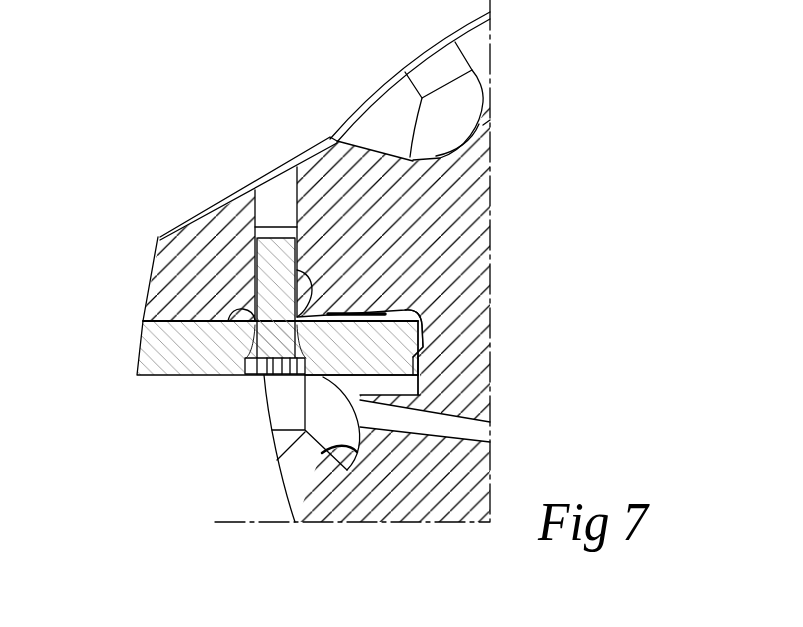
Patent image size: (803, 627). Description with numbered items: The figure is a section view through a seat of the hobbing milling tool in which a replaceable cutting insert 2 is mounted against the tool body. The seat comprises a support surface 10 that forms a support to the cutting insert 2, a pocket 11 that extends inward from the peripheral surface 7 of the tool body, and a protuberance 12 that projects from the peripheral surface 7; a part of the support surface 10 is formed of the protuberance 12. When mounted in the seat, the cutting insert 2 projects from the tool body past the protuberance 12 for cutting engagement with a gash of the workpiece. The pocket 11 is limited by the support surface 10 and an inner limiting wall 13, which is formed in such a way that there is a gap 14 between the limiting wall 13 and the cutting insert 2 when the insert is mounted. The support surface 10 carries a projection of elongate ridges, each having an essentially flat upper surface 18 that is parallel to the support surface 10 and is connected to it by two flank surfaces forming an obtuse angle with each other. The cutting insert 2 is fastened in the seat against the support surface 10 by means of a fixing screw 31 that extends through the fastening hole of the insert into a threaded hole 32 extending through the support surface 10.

The cutting insert 2 is at (150, 374).
The peripheral surface 7 is at (367, 102).
The support surface 10 is at (165, 321).
The pocket 11 is at (336, 387).
The protuberance 12 is at (178, 262).
The inner limiting wall 13 is at (413, 358).
The gap 14 is at (421, 398).
The upper surface 18 is at (322, 453).
The fixing screw 31 is at (272, 345).
The threaded hole 32 is at (274, 229).